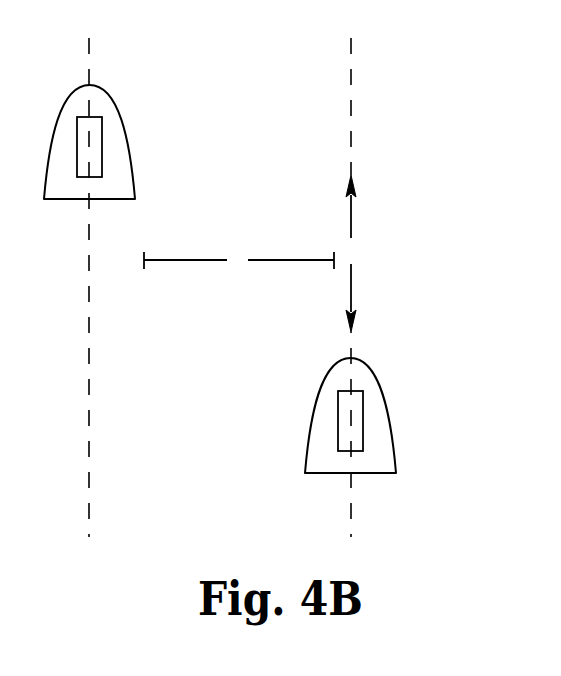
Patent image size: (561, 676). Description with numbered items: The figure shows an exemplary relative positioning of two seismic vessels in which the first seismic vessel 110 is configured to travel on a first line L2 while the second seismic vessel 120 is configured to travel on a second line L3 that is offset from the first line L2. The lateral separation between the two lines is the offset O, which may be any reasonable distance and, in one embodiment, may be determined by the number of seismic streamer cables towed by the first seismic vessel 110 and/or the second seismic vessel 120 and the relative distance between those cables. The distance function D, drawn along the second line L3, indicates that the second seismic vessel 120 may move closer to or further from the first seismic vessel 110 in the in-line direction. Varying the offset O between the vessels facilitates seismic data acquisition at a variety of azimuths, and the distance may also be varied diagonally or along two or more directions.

The first seismic vessel 110 is at (132, 157).
The second seismic vessel 120 is at (392, 430).
The first line L2 is at (89, 47).
The second line L3 is at (351, 74).
The offset O is at (239, 258).
The distance function D is at (351, 253).